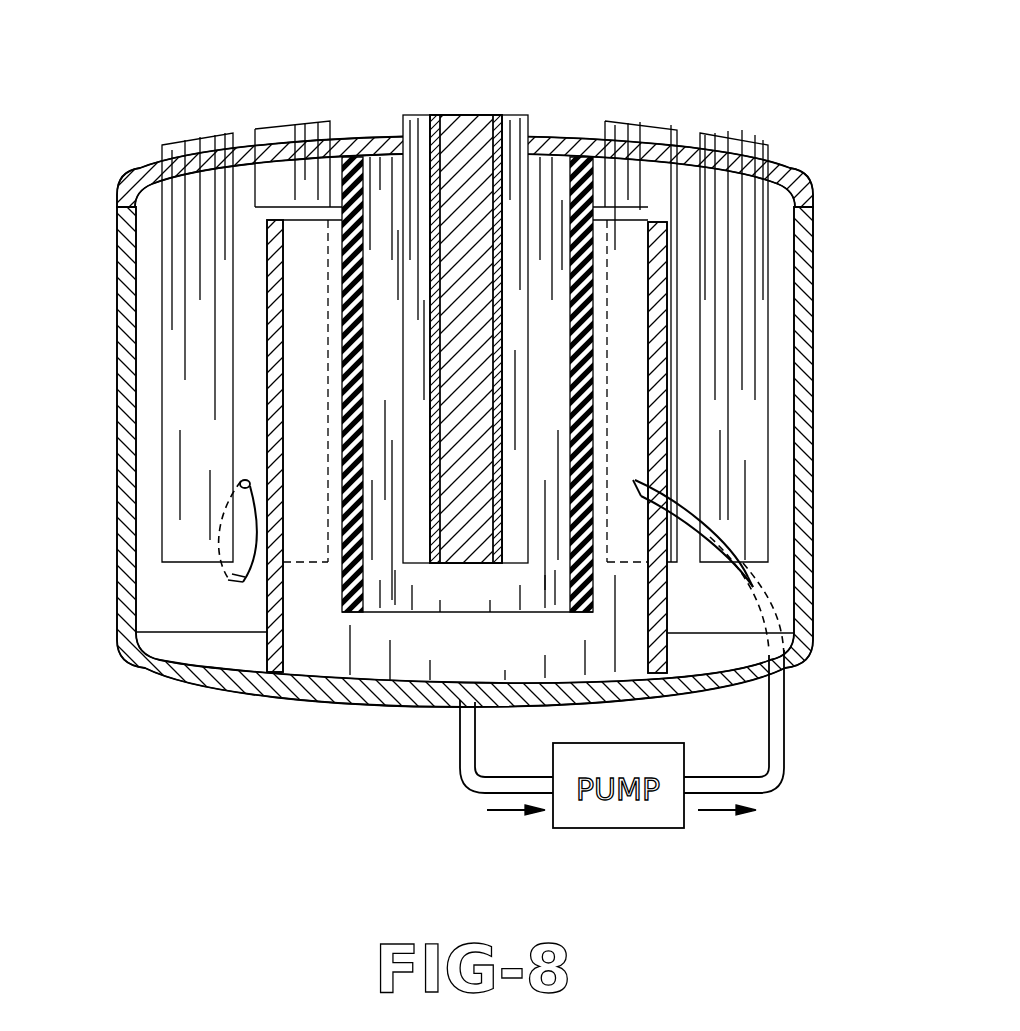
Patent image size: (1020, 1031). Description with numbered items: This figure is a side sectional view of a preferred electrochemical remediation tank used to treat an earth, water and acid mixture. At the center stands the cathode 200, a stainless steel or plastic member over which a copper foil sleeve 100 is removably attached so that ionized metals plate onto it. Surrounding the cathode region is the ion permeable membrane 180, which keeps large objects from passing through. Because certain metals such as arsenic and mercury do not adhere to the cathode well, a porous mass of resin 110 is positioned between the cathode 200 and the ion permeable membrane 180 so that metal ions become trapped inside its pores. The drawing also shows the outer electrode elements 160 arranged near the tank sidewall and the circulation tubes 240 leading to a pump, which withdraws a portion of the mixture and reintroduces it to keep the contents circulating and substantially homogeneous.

The copper foil sleeve 100 is at (507, 211).
The resin 110 is at (593, 190).
The outer electrode segments 160 is at (748, 382).
The ion permeable membrane 180 is at (268, 262).
The cathode 200 is at (462, 177).
The circulation tube 240 is at (237, 583).